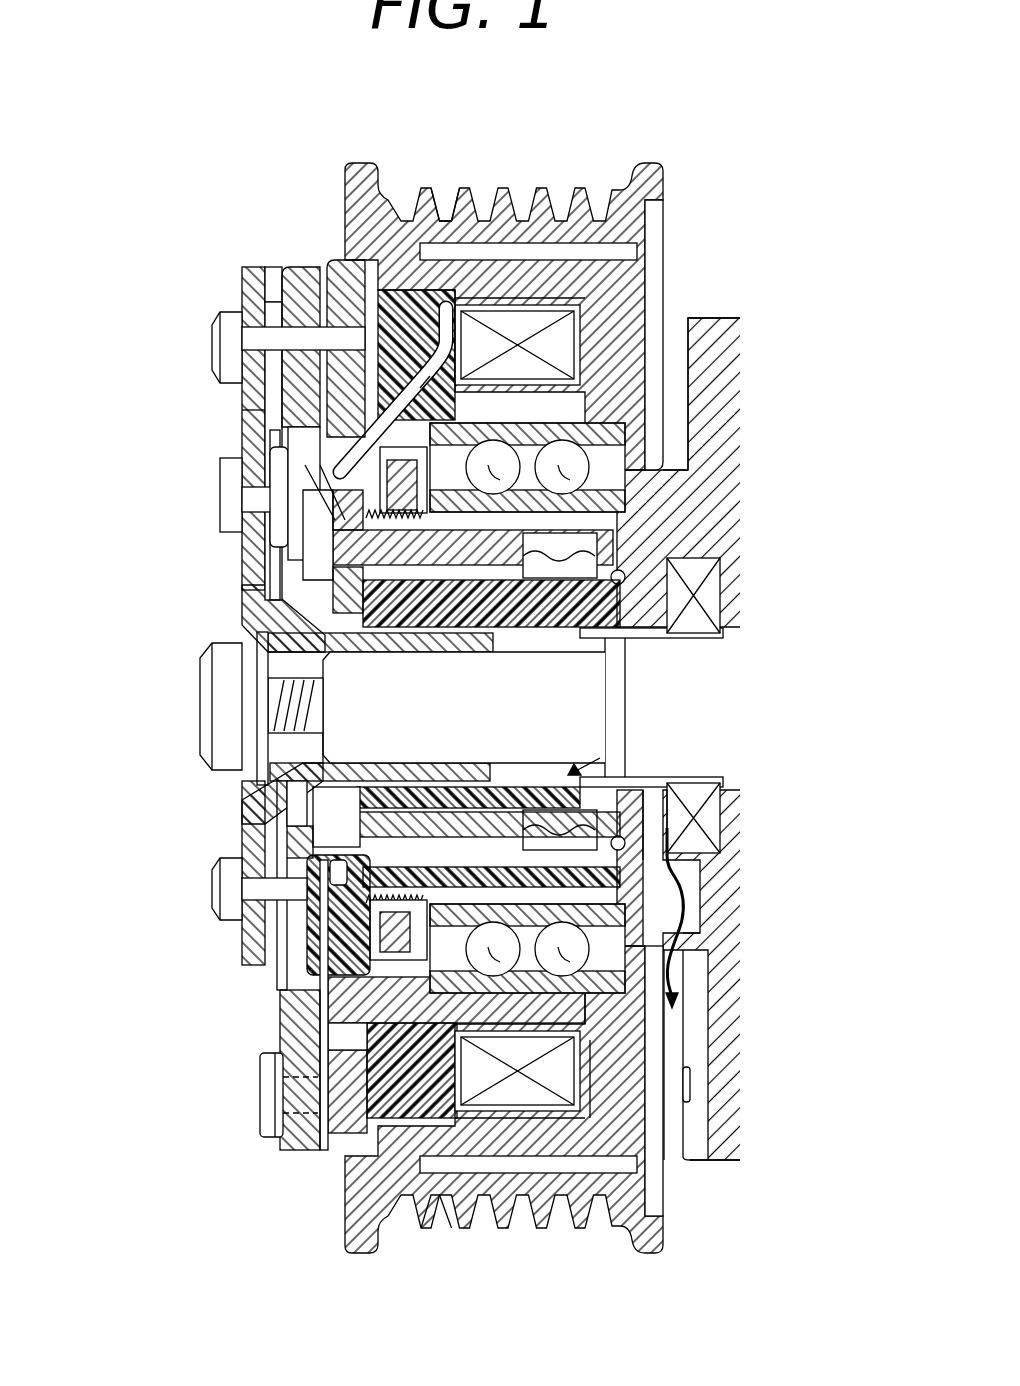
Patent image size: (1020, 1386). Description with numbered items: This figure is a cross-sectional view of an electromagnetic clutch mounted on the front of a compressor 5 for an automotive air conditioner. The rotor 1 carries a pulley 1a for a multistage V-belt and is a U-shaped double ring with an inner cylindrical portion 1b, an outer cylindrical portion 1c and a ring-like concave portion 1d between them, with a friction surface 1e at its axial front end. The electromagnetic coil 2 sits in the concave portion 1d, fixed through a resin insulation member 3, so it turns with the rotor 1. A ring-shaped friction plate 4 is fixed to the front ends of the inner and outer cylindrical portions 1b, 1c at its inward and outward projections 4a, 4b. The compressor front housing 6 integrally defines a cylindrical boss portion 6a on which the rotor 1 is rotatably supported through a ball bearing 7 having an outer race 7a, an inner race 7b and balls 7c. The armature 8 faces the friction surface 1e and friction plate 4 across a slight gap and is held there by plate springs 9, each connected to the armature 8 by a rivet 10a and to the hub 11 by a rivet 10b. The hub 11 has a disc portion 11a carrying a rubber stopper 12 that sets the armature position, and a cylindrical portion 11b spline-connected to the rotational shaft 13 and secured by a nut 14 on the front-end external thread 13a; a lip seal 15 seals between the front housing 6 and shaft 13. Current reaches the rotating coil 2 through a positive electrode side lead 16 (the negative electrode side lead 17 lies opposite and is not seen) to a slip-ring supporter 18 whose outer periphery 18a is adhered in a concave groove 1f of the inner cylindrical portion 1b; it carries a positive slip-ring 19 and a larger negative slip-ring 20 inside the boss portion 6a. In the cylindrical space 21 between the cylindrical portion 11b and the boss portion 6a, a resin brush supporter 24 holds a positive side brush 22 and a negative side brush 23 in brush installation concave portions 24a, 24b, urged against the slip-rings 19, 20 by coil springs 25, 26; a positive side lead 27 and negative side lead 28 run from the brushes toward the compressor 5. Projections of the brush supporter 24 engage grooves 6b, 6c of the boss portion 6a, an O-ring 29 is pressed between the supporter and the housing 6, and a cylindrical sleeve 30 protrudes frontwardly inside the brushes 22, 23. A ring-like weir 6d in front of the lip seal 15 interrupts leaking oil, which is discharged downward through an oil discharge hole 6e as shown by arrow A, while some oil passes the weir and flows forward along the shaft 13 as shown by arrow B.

The rotor 1 is at (618, 288).
The pulley 1a is at (440, 222).
The inner cylindrical portion 1b is at (640, 372).
The outer cylindrical portion 1c is at (542, 277).
The ring-like concave portion 1d is at (520, 290).
The friction surface 1e is at (338, 1157).
The concave groove 1f is at (427, 1160).
The electromagnetic coil 2 is at (663, 236).
The insulation member 3 is at (393, 277).
The friction plate 4 is at (242, 270).
The projections 4a is at (222, 330).
The projections 4b is at (345, 272).
The compressor 5 is at (707, 1163).
The front housing 6 is at (688, 1162).
The cylindrical boss portion 6a is at (330, 910).
The groove 6b is at (500, 1100).
The groove 6c is at (620, 500).
The ring-like weir 6d is at (680, 840).
The oil discharge hole 6e is at (702, 942).
The ball bearing 7 is at (570, 1010).
The outer race 7a is at (560, 1000).
The inner race 7b is at (560, 990).
The balls 7c is at (580, 1020).
The armature 8 is at (307, 275).
The plate springs 9 is at (242, 443).
The rivet 10a is at (262, 1108).
The rivet 10b is at (227, 480).
The hub 11 is at (242, 573).
The disc portion 11a is at (245, 410).
The cylindrical portion 11b is at (258, 805).
The stopper 12 is at (268, 300).
The rotational shaft 13 is at (630, 718).
The front-end external thread 13a is at (270, 698).
The nut 14 is at (222, 752).
The lip seal 15 is at (705, 600).
The positive electrode side lead 16 is at (347, 210).
The negative electrode side lead 17 is at (425, 382).
The slip-ring supporter 18 is at (330, 872).
The outer periphery 18a is at (300, 998).
The positive slip-ring 19 is at (300, 833).
The negative slip-ring 20 is at (300, 548).
The cylindrical space 21 is at (555, 665).
The positive side brush 22 is at (222, 886).
The negative side brush 23 is at (305, 515).
The brush supporter 24 is at (560, 558).
The brush installation concave portion 24a is at (365, 878).
The brush installation concave portion 24b is at (490, 633).
The coil spring 25 is at (690, 818).
The coil spring 26 is at (565, 540).
The positive side lead 27 is at (580, 782).
The negative side lead 28 is at (600, 633).
The O-ring 29 is at (640, 583).
The cylindrical sleeve 30 is at (260, 634).
The arrow A is at (715, 982).
The arrow B is at (590, 756).